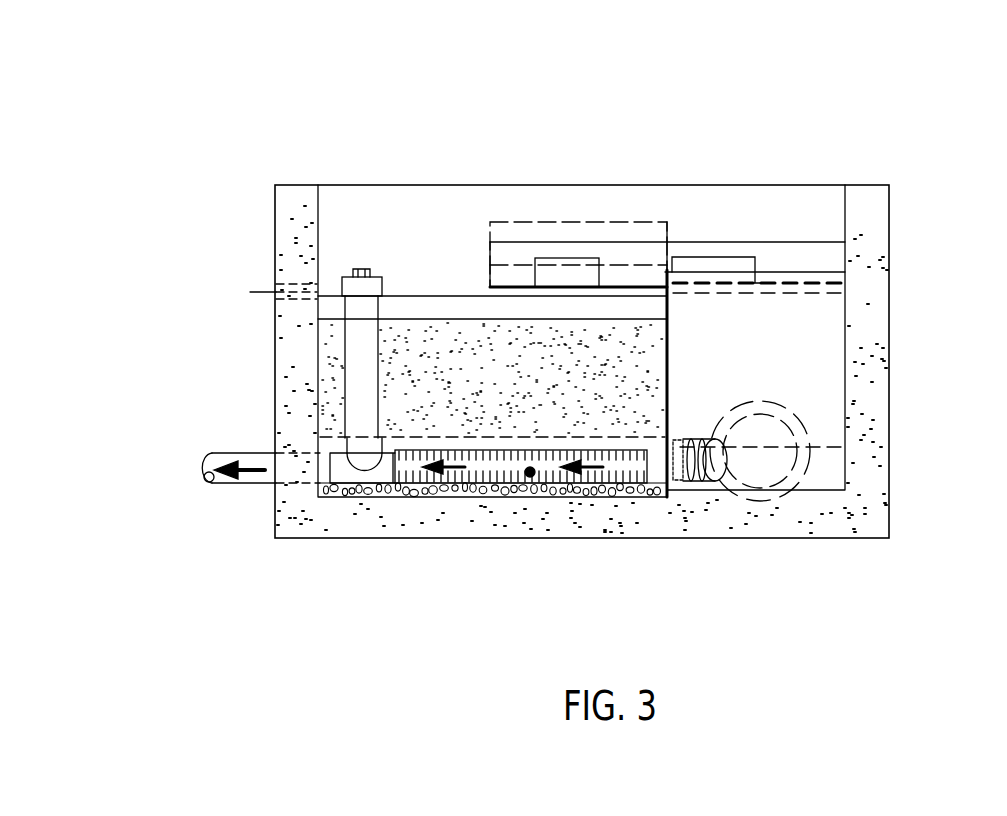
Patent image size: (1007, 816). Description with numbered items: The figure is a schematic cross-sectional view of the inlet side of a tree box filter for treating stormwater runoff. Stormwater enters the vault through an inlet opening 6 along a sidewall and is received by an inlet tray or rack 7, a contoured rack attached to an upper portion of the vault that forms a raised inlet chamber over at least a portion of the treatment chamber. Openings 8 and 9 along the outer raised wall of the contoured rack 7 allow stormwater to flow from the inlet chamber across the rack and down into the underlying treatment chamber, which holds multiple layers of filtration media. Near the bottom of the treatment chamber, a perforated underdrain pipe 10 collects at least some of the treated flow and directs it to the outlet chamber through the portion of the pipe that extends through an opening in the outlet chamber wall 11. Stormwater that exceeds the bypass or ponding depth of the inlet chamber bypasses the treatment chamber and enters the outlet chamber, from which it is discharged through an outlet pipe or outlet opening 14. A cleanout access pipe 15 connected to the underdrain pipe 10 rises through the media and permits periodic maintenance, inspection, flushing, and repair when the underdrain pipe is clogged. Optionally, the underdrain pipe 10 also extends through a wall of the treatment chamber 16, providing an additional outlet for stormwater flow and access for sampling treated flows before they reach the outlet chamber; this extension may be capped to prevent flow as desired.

The inlet opening 6 is at (508, 220).
The inlet tray or rack 7 is at (730, 240).
The opening 8 is at (572, 258).
The opening 9 is at (688, 257).
The perforated underdrain pipe 10 is at (536, 477).
The outlet chamber wall 11 is at (705, 470).
The outlet pipe or outlet opening 14 is at (786, 430).
The cleanout access pipe 15 is at (340, 282).
The wall of the treatment chamber 16 is at (255, 487).